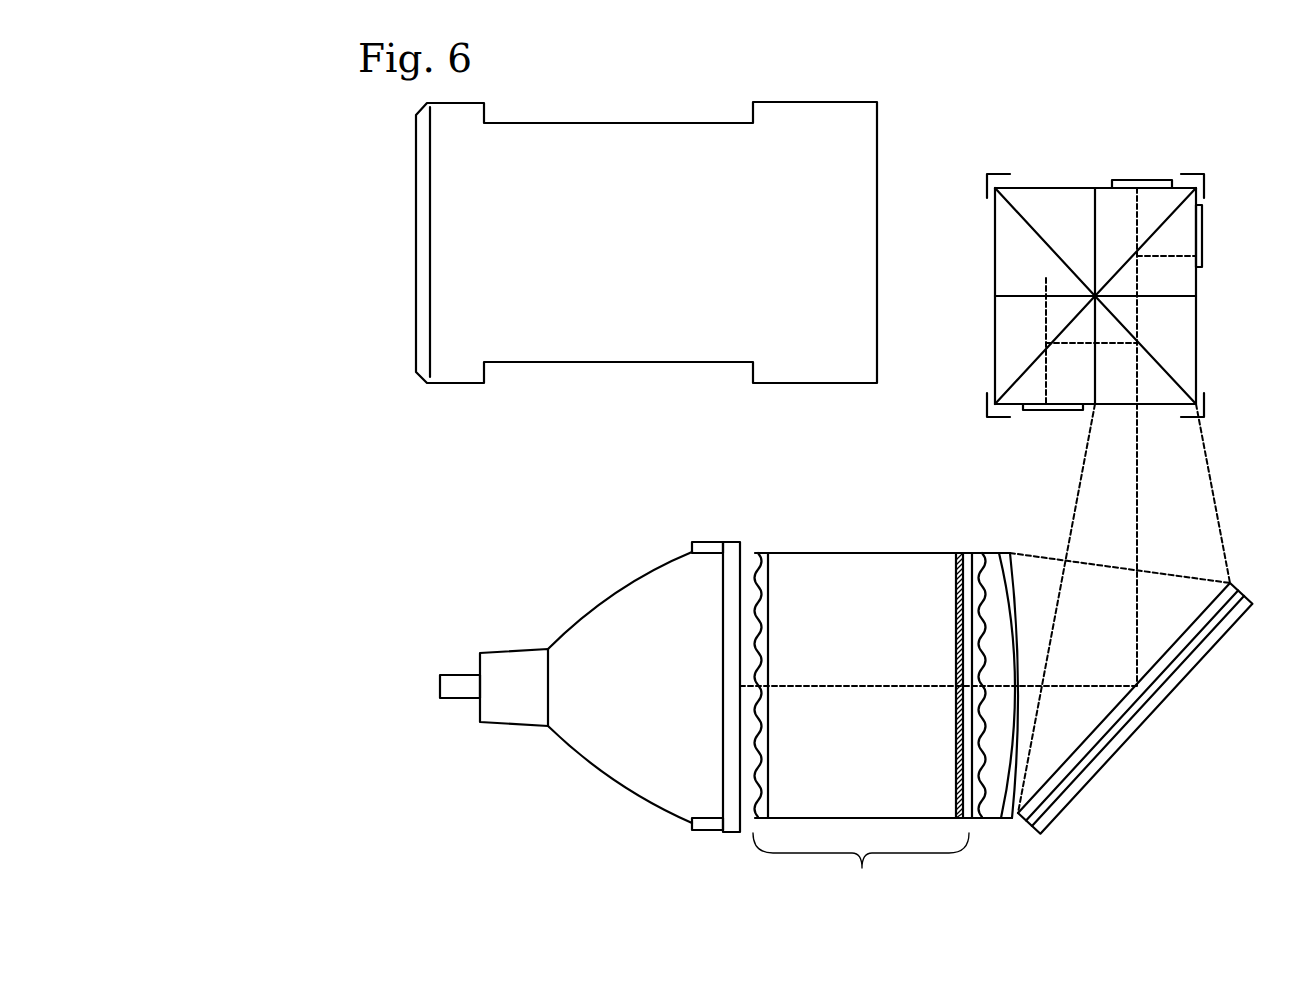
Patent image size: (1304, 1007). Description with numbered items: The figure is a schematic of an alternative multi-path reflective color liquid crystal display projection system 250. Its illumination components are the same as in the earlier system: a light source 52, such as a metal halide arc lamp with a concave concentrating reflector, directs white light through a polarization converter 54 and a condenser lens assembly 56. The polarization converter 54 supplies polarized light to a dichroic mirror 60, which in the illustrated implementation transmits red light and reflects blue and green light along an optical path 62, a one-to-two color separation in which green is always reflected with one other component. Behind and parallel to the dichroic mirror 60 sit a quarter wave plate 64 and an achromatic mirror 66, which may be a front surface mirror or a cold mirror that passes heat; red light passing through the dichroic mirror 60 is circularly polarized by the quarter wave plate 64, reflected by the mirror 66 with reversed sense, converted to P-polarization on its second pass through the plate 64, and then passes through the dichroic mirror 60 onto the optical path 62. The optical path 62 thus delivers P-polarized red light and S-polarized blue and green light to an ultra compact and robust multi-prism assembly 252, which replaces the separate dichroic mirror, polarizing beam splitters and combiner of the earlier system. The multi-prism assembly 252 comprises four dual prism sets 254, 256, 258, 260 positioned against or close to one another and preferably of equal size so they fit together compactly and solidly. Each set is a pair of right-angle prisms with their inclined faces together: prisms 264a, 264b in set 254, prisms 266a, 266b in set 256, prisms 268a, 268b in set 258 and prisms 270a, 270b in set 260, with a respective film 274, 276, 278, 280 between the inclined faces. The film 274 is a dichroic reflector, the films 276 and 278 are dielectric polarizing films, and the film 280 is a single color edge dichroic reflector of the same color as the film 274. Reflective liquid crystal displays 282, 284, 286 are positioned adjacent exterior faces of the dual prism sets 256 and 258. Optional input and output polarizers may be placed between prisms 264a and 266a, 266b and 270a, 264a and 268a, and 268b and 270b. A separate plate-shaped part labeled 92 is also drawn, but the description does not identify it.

The housing plate 92 is at (646, 242).
The multi-path reflective color liquid crystal display projection system 250 is at (641, 474).
The multi-prism assembly 252 is at (1029, 158).
The dual prism set 254 is at (1204, 413).
The dual prism set 256 is at (987, 413).
The dual prism set 258 is at (1194, 171).
The dual prism set 260 is at (1000, 173).
The right-angle prism 264a is at (1160, 404).
The right-angle prism 264b is at (1190, 357).
The right-angle prism 266a is at (1018, 404).
The right-angle prism 266b is at (1002, 357).
The right-angle prism 268a is at (1190, 273).
The right-angle prism 268b is at (1103, 187).
The right-angle prism 270a is at (1002, 228).
The right-angle prism 270b is at (1053, 187).
The film 274 is at (1150, 353).
The film 276 is at (1035, 359).
The film 278 is at (1172, 214).
The film 280 is at (1058, 249).
The reflective liquid crystal display 282 is at (1022, 411).
The reflective liquid crystal display 284 is at (1204, 244).
The reflective liquid crystal display 286 is at (1150, 179).
The light source 52 is at (590, 786).
The polarization converter 54 is at (882, 725).
The condenser lens assembly 56 is at (1007, 617).
The dichroic mirror 60 is at (1107, 725).
The optical path 62 is at (1143, 503).
The quarter wave plate 64 is at (1217, 622).
The achromatic mirror 66 is at (1183, 670).